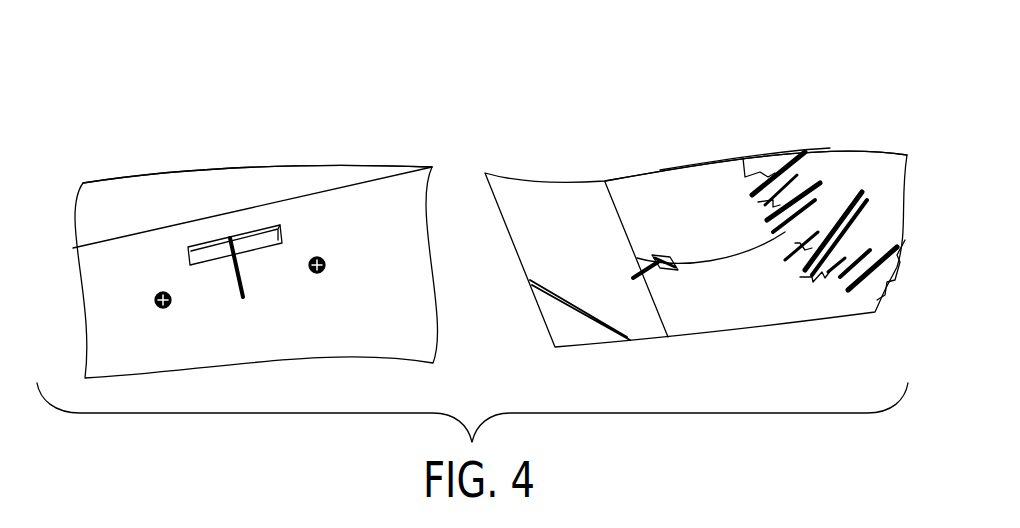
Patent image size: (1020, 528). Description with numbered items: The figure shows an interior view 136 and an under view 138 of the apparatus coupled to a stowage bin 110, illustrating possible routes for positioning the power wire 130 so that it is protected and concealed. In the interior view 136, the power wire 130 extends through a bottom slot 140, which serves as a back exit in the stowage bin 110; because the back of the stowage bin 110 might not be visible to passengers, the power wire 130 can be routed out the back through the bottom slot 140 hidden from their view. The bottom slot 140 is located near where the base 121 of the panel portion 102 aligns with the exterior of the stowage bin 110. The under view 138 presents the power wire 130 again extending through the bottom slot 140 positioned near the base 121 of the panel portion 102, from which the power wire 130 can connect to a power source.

The interior view 136 is at (220, 108).
The under view 138 is at (575, 105).
The stowage bin 110 is at (418, 165).
The panel portion 102 is at (719, 140).
The base 121 is at (658, 170).
The bottom slot 140 is at (300, 230).
The power wire 130 is at (262, 298).